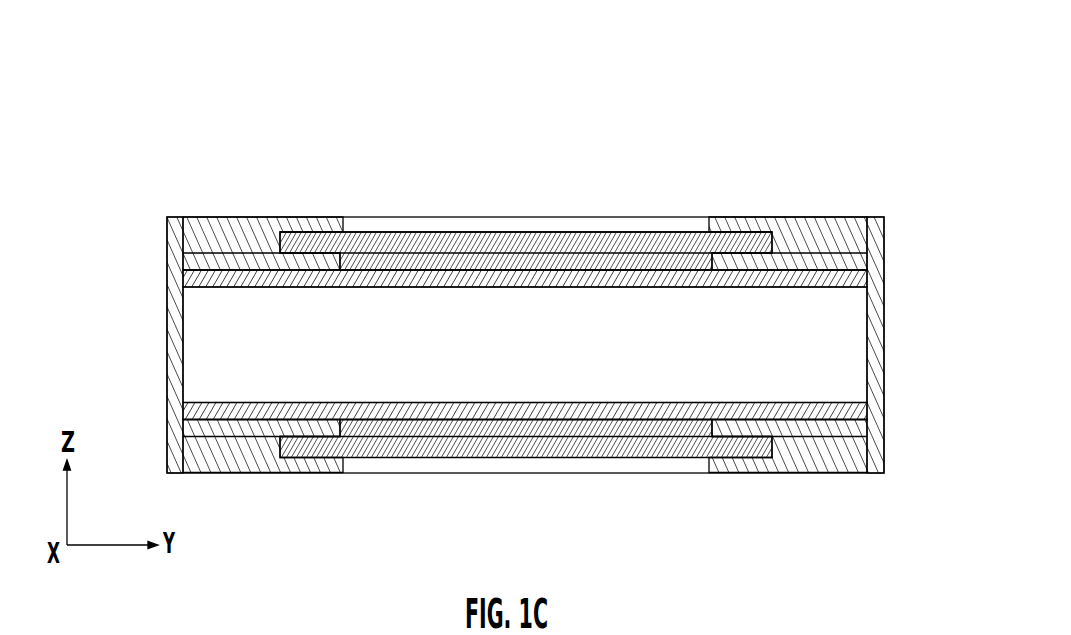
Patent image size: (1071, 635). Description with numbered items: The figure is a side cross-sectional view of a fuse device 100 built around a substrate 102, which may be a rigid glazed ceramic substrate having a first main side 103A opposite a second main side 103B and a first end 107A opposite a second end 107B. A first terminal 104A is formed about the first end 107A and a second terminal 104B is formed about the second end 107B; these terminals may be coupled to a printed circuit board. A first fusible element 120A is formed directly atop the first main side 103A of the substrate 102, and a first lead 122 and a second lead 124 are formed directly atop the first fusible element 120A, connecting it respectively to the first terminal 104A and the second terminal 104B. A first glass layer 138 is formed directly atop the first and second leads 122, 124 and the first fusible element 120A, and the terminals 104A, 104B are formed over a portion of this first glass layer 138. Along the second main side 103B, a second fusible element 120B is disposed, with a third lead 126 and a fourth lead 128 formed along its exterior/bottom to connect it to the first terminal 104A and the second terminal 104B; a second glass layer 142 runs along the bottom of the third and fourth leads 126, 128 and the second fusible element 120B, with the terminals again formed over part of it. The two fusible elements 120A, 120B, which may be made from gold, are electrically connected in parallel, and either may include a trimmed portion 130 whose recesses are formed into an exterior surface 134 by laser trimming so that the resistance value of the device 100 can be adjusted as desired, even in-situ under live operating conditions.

The fuse device 100 is at (185, 105).
The substrate 102 is at (845, 340).
The first main side 103A is at (395, 272).
The second main side 103B is at (832, 416).
The first terminal 104A is at (182, 237).
The second terminal 104B is at (877, 238).
The first end 107A is at (193, 346).
The second end 107B is at (832, 337).
The first fusible element 120A is at (568, 272).
The second fusible element 120B is at (578, 416).
The first lead 122 is at (223, 258).
The second lead 124 is at (814, 265).
The third lead 126 is at (259, 437).
The fourth lead 128 is at (792, 430).
The trimmed portion 130 is at (517, 265).
The exterior surface 134 is at (652, 272).
The first glass layer 138 is at (478, 237).
The second glass layer 142 is at (656, 442).